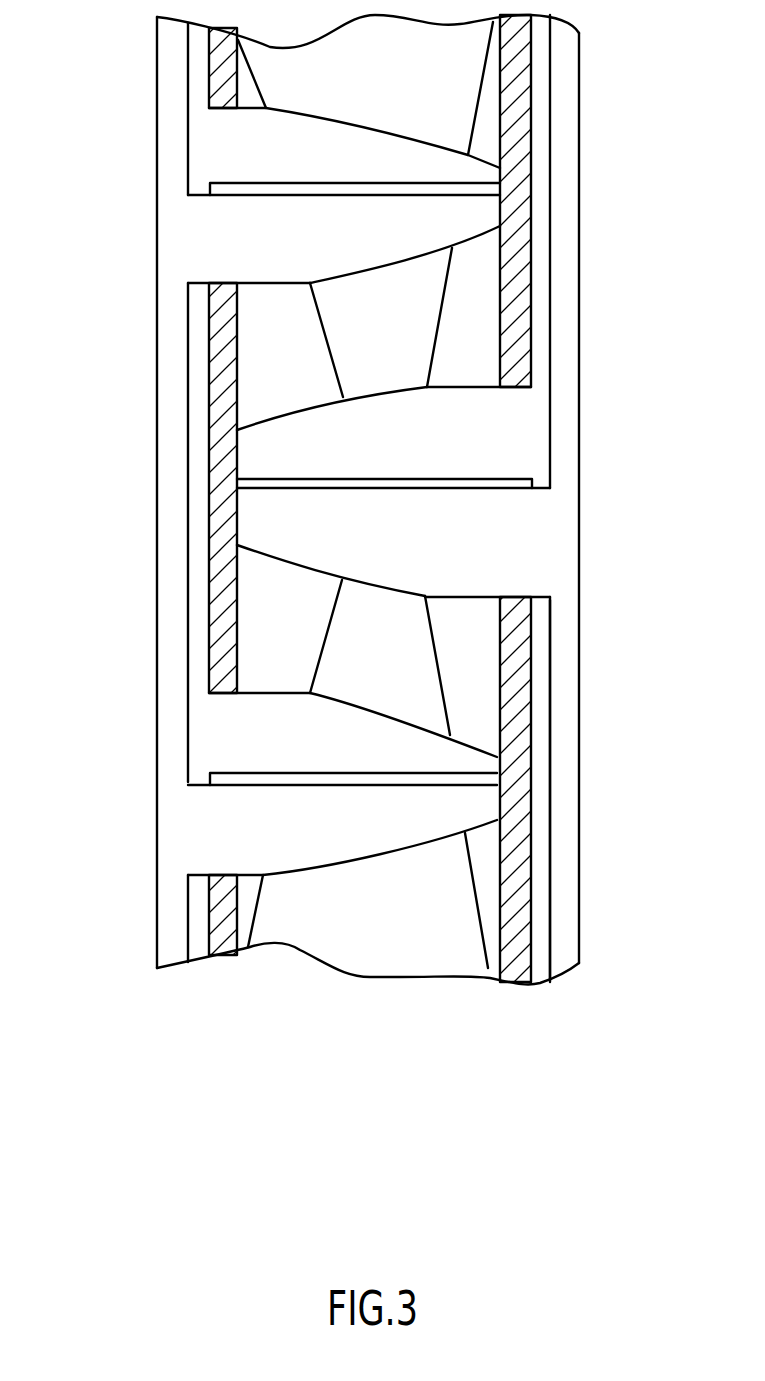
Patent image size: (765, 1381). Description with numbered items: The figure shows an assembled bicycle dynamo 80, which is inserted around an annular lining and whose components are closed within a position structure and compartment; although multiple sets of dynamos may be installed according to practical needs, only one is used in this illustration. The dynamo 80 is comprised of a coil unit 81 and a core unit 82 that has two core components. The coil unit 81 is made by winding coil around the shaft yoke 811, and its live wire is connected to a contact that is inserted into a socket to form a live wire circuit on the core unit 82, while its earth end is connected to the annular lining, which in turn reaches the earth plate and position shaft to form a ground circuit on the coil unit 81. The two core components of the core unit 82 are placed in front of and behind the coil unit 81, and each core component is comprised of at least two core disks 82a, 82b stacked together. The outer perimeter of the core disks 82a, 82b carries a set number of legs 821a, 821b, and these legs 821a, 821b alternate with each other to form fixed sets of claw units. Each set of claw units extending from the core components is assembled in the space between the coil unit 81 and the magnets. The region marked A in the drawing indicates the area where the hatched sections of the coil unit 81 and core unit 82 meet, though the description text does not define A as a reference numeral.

The dynamo 80 is at (618, 213).
The coil unit 81 is at (458, 77).
The shaft yoke 811 is at (518, 97).
The leg 821a is at (533, 437).
The leg 821b is at (517, 546).
The core unit 82 is at (579, 680).
The core disk 82b is at (560, 812).
The core disk 82a is at (535, 868).
The region A is at (255, 447).